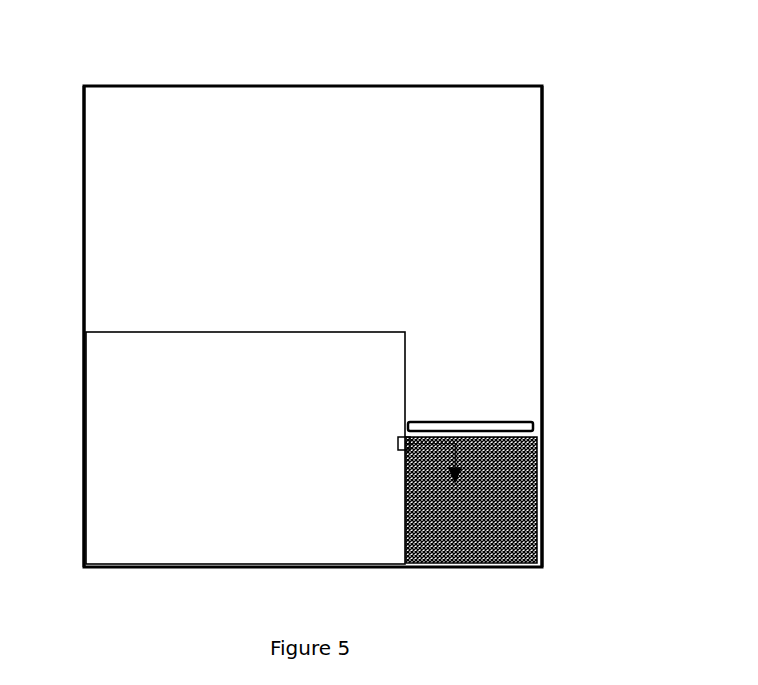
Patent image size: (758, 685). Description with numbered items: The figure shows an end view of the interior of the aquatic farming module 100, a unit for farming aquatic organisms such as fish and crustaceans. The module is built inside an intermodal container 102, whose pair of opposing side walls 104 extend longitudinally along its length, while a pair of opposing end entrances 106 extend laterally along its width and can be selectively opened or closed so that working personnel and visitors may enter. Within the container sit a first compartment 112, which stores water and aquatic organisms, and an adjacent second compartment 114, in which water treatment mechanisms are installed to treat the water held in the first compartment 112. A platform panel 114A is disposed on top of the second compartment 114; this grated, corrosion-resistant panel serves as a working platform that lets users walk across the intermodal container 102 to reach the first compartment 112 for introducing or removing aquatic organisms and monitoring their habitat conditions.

The aquatic farming module 100 is at (68, 85).
The intermodal container 102 is at (543, 272).
The side walls 104 is at (85, 242).
The end entrances 106 is at (345, 142).
The first compartment 112 is at (202, 348).
The second compartment 114 is at (523, 503).
The platform panel 114A is at (528, 421).